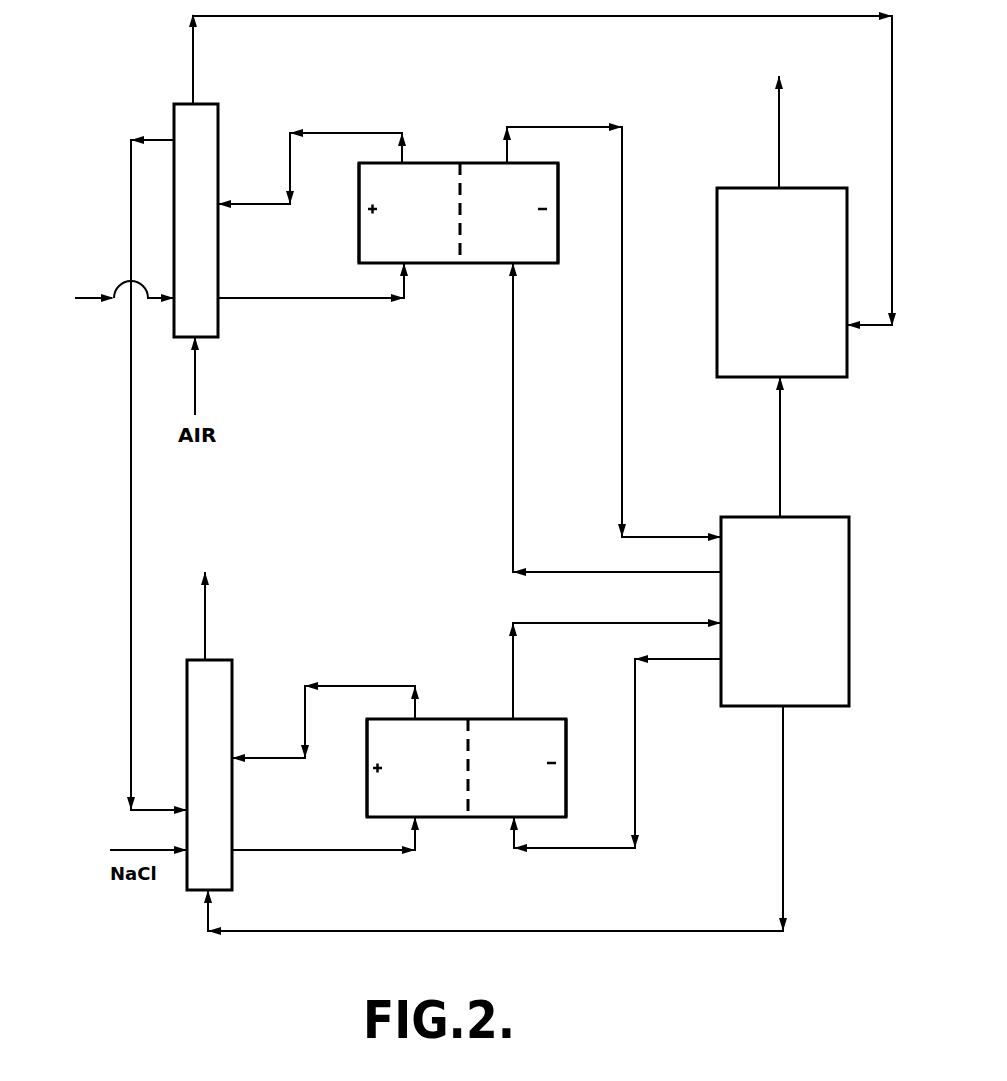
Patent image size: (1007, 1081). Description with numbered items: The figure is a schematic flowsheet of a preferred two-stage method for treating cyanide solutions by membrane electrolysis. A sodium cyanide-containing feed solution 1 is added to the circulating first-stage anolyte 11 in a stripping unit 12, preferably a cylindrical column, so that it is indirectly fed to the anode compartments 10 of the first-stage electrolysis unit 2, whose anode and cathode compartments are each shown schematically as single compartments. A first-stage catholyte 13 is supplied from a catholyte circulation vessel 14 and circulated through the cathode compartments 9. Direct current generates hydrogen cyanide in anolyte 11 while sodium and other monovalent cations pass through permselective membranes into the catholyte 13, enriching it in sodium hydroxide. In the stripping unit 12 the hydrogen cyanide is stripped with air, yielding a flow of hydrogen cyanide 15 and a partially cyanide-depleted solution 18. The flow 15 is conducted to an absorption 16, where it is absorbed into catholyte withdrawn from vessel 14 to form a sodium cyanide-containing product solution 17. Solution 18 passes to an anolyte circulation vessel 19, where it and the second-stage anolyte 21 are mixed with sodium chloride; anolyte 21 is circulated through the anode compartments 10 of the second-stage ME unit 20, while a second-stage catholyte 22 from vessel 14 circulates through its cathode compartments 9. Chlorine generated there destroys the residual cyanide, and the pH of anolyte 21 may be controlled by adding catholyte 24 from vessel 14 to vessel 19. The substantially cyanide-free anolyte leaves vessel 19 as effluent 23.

The feed solution 1 is at (77, 300).
The first-stage electrolysis unit 2 is at (359, 241).
The cathode compartments 9 is at (514, 225).
The anode compartments 10 is at (422, 225).
The first-stage anolyte 11 is at (315, 130).
The stripping unit 12 is at (218, 136).
The first-stage catholyte 13 is at (553, 127).
The catholyte circulation vessel 14 is at (810, 516).
The flow of hydrogen cyanide 15 is at (488, 17).
The absorption 16 is at (805, 188).
The sodium cyanide-containing solution 17 is at (782, 122).
The partially cyanide-depleted solution 18 is at (131, 445).
The anolyte circulation vessel 19 is at (232, 700).
The second-stage ME unit 20 is at (367, 797).
The second-stage anolyte 21 is at (393, 685).
The second-stage catholyte 22 is at (515, 693).
The effluent 23 is at (206, 612).
The catholyte 24 is at (785, 857).